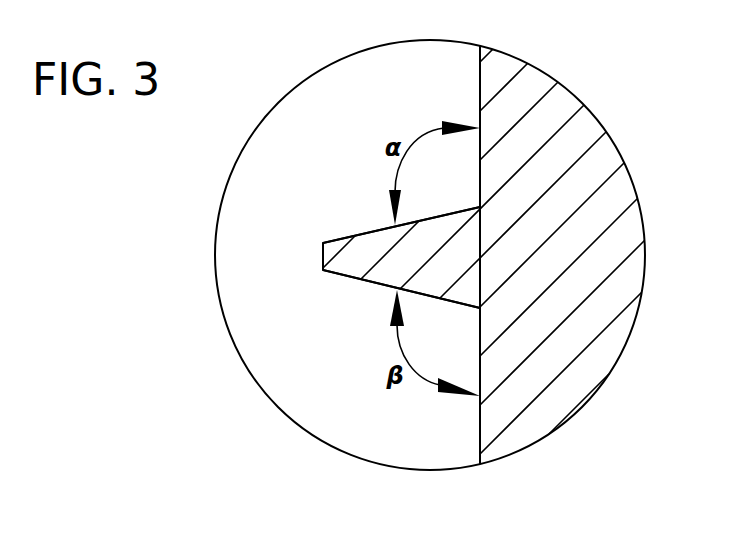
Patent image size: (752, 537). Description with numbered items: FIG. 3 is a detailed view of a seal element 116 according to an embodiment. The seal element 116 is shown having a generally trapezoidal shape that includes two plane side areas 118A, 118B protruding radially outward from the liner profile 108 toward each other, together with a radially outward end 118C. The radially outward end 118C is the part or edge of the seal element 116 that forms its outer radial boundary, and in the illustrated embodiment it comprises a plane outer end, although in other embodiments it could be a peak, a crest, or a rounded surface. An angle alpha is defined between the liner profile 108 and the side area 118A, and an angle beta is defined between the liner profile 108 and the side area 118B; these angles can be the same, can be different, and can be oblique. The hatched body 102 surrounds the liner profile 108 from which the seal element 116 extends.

The body 102 is at (553, 110).
The liner profile 108 is at (480, 87).
The seal element 116 is at (305, 332).
The side area 118A is at (356, 236).
The side area 118B is at (353, 278).
The radially outward end 118C is at (322, 258).